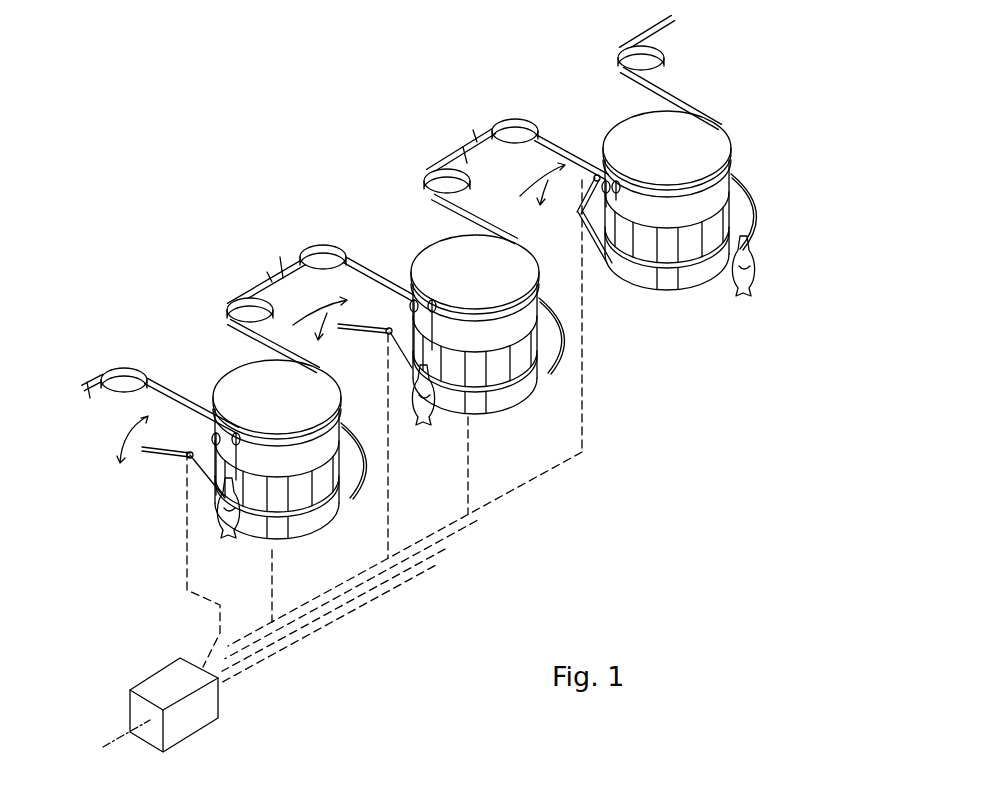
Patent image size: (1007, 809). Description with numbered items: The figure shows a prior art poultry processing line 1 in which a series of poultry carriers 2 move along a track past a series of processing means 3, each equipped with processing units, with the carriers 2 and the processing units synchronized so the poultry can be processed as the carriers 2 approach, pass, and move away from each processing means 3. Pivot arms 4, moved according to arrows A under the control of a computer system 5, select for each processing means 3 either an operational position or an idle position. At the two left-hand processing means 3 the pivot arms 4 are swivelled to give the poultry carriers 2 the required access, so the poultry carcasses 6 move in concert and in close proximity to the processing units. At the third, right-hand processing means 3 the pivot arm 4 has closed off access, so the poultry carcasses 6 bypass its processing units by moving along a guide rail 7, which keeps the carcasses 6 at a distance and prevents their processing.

The processing line 1 is at (402, 221).
The poultry carrier 2 is at (212, 437).
The processing means 3 is at (219, 353).
The pivot arm 4 is at (163, 460).
The computer system 5 is at (157, 677).
The poultry carcass 6 is at (272, 538).
The guide rail 7 is at (673, 290).